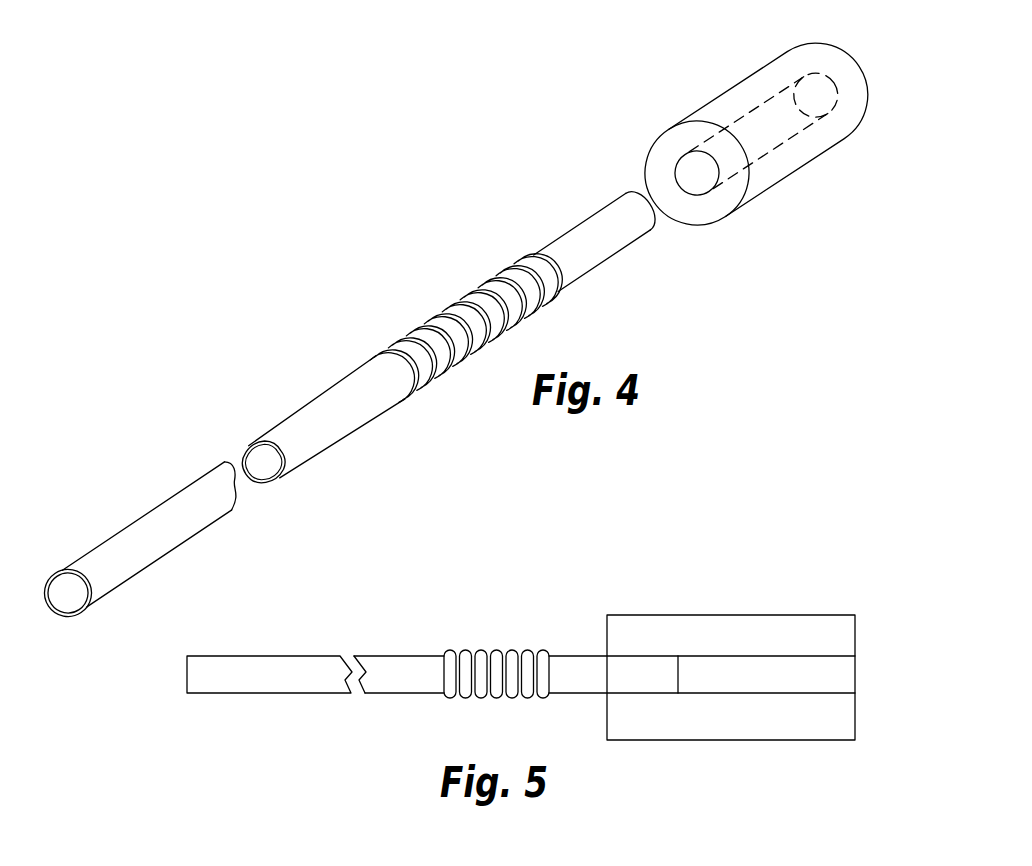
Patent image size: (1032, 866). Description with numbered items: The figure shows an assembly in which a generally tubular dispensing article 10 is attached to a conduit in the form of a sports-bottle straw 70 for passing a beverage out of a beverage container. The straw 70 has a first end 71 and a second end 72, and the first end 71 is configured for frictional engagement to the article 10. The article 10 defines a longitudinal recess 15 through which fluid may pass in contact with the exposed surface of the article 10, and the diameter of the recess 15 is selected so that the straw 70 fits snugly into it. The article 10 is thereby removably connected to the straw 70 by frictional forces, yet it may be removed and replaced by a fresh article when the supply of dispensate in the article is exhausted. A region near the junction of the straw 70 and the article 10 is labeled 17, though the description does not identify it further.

In FIG. 4, the article 10 is at (698, 89).
In FIG. 5, the article 10 is at (719, 605).
In FIG. 4, the longitudinal recess 15 is at (694, 176).
In FIG. 4, the shaft end junction 17 is at (655, 218).
In FIG. 4, the sports-bottle straw 70 is at (285, 405).
In FIG. 5, the sports-bottle straw 70 is at (320, 647).
In FIG. 5, the first end 71 is at (676, 677).
In FIG. 4, the second end 72 is at (50, 576).
In FIG. 5, the second end 72 is at (187, 674).